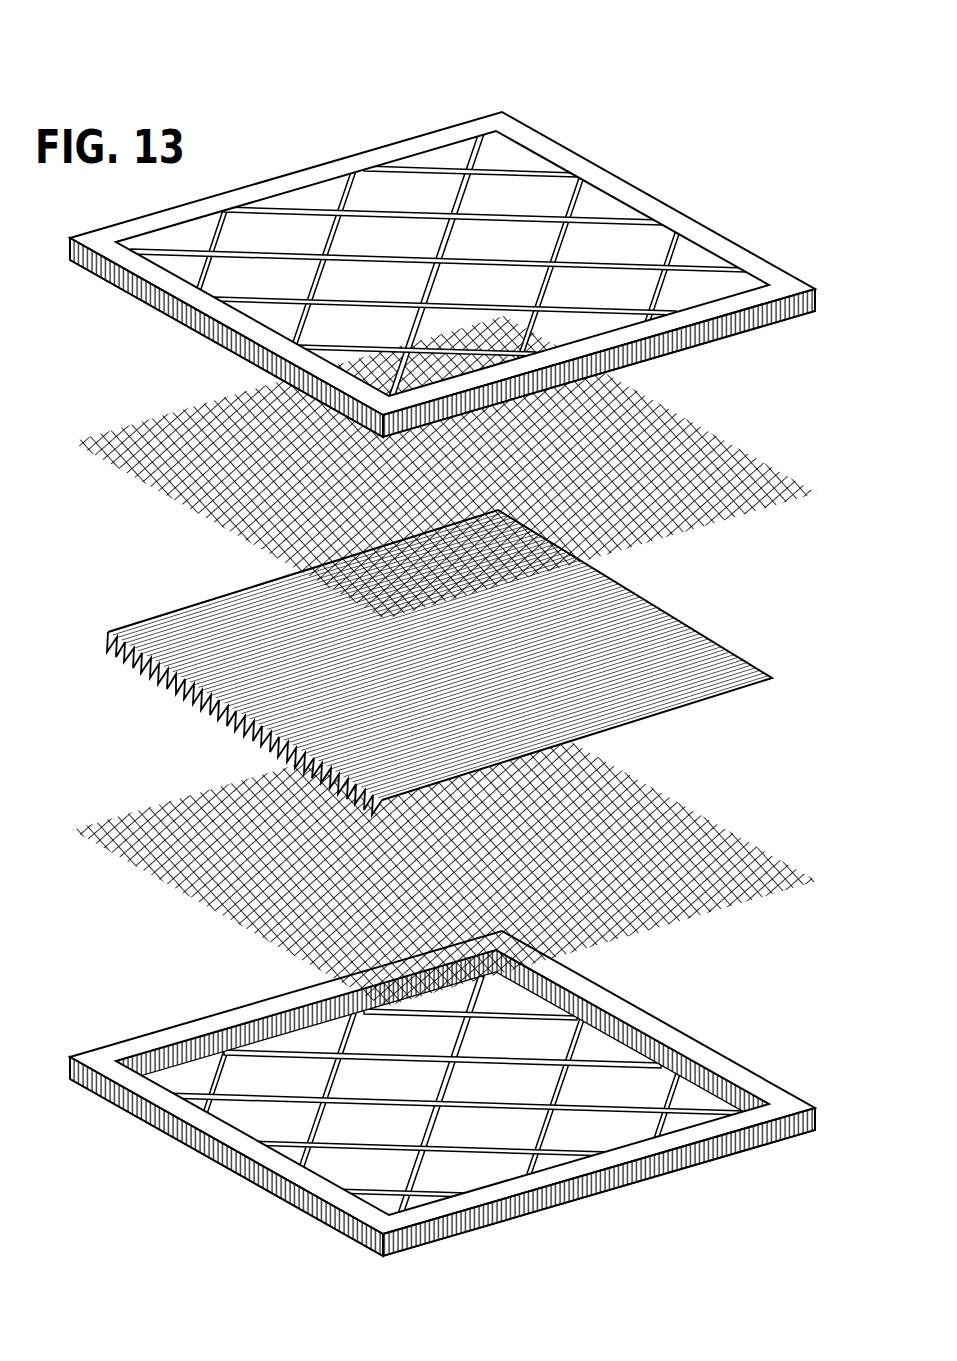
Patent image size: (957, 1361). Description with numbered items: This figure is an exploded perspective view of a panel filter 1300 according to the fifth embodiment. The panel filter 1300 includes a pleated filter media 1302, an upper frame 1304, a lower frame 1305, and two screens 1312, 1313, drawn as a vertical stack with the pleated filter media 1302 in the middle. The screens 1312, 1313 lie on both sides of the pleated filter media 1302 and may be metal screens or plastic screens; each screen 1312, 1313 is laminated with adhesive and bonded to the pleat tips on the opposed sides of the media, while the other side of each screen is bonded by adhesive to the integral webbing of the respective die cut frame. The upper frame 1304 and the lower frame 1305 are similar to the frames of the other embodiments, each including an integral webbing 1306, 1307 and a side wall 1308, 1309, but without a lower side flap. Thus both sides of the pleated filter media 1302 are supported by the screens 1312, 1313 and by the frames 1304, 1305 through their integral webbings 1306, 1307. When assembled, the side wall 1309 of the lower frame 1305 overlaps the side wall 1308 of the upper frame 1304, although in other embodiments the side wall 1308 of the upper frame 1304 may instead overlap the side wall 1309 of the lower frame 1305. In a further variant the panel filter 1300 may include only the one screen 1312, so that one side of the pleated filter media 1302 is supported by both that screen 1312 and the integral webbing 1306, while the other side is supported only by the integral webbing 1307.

The panel filter 1300 is at (718, 52).
The pleated filter media 1302 is at (742, 650).
The upper frame 1304 is at (457, 274).
The lower frame 1305 is at (472, 1093).
The integral webbing 1306 is at (582, 193).
The integral webbing 1307 is at (686, 1073).
The side wall 1308 is at (752, 318).
The side wall 1309 is at (760, 1140).
The screen 1312 is at (738, 452).
The screen 1313 is at (738, 850).